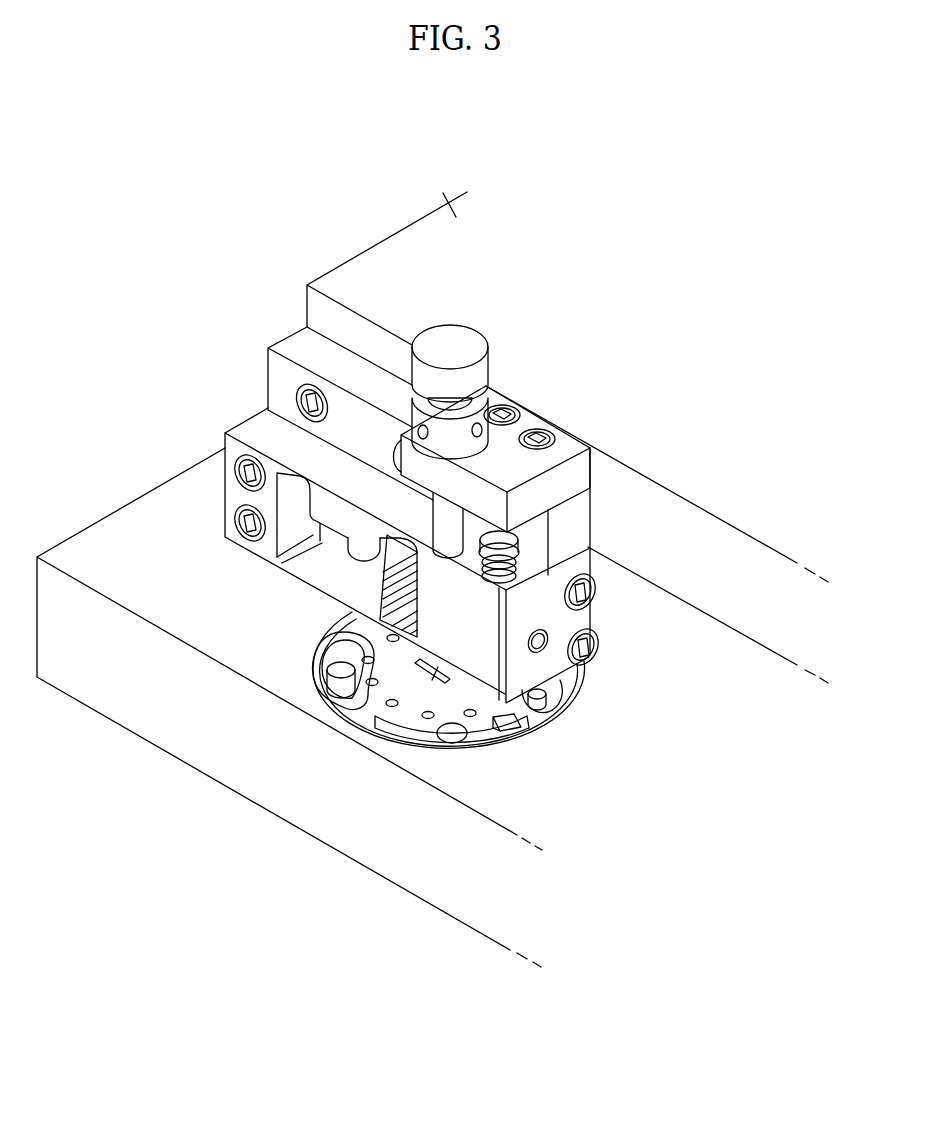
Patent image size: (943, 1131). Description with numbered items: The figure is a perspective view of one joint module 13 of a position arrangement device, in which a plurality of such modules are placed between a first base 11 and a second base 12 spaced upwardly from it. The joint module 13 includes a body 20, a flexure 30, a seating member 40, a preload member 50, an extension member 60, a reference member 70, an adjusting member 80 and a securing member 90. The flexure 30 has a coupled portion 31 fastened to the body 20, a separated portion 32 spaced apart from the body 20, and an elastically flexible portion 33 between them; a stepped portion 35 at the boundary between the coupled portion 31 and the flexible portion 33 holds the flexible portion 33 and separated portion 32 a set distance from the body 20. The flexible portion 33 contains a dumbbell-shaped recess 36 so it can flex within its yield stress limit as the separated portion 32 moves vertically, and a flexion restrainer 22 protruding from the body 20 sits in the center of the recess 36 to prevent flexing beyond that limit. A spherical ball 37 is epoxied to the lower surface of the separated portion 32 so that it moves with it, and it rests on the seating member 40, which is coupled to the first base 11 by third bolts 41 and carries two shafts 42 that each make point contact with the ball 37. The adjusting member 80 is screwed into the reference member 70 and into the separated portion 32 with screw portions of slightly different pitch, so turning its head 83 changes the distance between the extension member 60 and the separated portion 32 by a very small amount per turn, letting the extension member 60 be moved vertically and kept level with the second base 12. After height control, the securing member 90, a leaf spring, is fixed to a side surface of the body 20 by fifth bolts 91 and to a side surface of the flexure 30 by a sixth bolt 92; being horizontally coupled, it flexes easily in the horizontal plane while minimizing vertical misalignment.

The first base 11 is at (243, 768).
The second base 12 is at (445, 200).
The joint module 13 is at (325, 124).
The body 20 is at (328, 390).
The flexion restrainer 22 is at (290, 550).
The flexure 30 is at (376, 598).
The coupled portion 31 is at (262, 426).
The separated portion 32 is at (593, 681).
The flexible portion 33 is at (320, 573).
The stepped portion 35 is at (318, 443).
The dumbbell-shaped recess 36 is at (353, 568).
The spherical ball 37 is at (518, 724).
The seating member 40 is at (488, 764).
The third bolts 41 is at (448, 742).
The shafts 42 is at (417, 672).
The preload member 50 is at (522, 557).
The extension member 60 is at (570, 477).
The reference member 70 is at (476, 407).
The adjusting member 80 is at (485, 355).
The head 83 is at (447, 342).
The securing member 90 is at (596, 608).
The fifth bolts 91 is at (577, 575).
The sixth bolt 92 is at (575, 637).